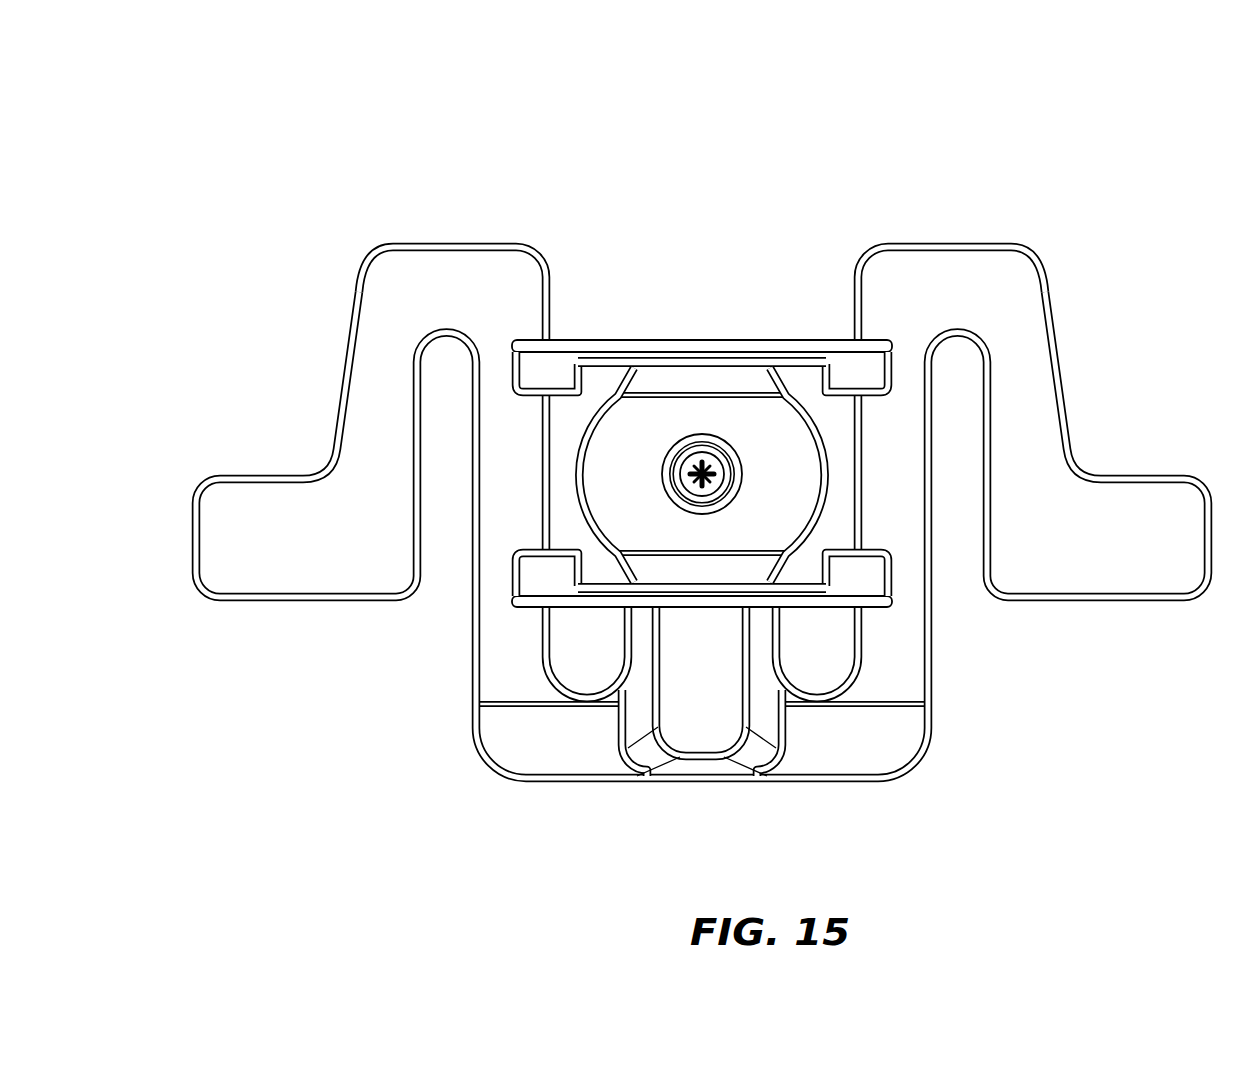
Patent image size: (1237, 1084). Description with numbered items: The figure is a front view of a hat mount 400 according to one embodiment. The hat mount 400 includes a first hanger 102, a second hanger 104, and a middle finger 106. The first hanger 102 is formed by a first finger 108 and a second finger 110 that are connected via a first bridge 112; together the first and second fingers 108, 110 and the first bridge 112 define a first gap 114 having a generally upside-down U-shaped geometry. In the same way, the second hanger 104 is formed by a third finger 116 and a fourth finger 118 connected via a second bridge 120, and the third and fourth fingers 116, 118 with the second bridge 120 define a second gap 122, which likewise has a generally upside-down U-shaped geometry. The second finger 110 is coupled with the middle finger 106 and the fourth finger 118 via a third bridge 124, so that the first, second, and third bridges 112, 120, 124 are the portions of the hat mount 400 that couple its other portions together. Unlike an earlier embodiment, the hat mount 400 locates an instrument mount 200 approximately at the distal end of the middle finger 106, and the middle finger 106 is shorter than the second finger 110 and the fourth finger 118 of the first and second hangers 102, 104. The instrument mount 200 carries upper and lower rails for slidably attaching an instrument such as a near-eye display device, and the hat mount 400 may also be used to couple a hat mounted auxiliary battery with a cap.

The hat mount 400 is at (702, 486).
The first hanger 102 is at (412, 460).
The second hanger 104 is at (992, 451).
The middle finger 106 is at (650, 764).
The first finger 108 is at (350, 388).
The second finger 110 is at (495, 605).
The first bridge 112 is at (445, 282).
The first gap 114 is at (450, 570).
The third finger 116 is at (1045, 405).
The fourth finger 118 is at (913, 600).
The second bridge 120 is at (945, 278).
The second gap 122 is at (955, 572).
The third bridge 124 is at (515, 743).
The instrument mount 200 is at (682, 335).